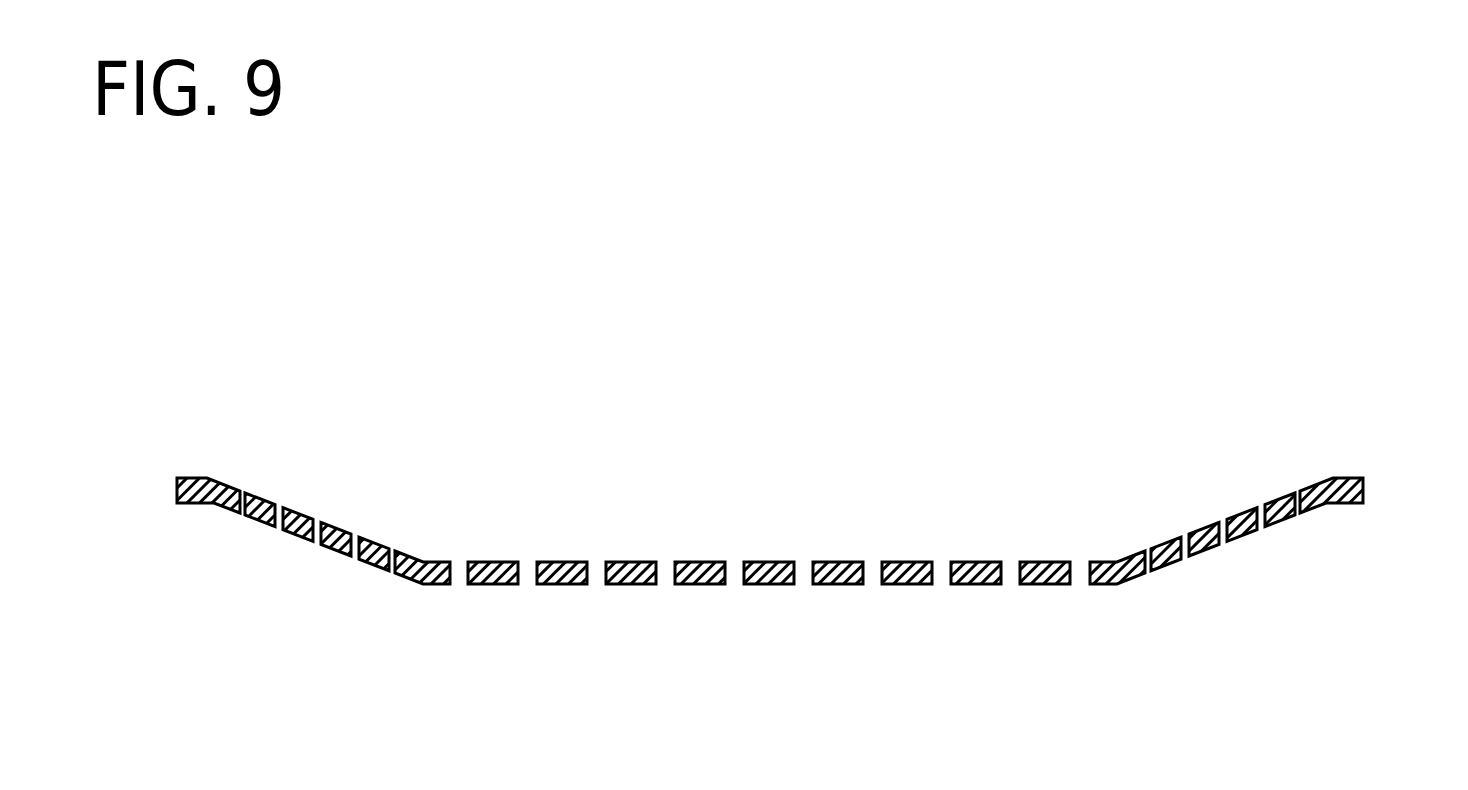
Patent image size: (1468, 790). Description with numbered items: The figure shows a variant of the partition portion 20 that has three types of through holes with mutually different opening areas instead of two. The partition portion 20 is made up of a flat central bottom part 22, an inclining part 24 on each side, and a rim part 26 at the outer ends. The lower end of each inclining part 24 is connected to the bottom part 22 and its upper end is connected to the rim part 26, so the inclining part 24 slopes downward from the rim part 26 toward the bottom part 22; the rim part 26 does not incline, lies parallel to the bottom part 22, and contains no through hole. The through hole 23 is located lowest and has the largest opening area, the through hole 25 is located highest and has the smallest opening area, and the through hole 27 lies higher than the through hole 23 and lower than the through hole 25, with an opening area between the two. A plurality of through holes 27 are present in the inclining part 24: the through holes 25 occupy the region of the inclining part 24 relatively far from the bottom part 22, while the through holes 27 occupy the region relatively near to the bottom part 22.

The partition portion 20 is at (1001, 211).
The bottom part 22 is at (1127, 590).
The through hole 23 is at (655, 572).
The inclining part 24 is at (1127, 590).
The through hole 25 is at (1298, 497).
The rim part 26 is at (1425, 627).
The through hole 27 is at (1188, 540).